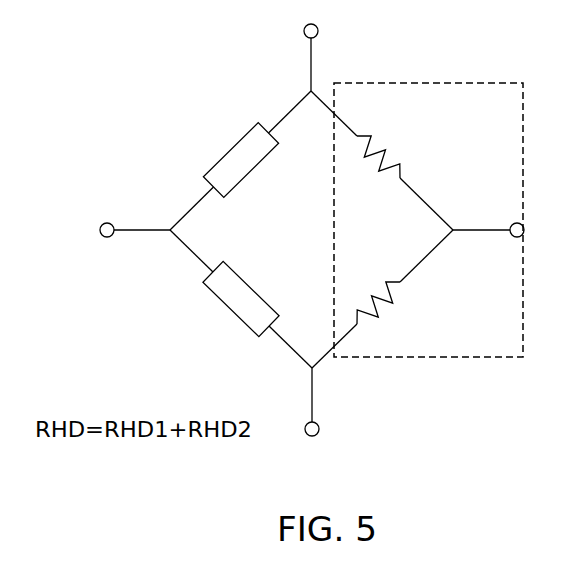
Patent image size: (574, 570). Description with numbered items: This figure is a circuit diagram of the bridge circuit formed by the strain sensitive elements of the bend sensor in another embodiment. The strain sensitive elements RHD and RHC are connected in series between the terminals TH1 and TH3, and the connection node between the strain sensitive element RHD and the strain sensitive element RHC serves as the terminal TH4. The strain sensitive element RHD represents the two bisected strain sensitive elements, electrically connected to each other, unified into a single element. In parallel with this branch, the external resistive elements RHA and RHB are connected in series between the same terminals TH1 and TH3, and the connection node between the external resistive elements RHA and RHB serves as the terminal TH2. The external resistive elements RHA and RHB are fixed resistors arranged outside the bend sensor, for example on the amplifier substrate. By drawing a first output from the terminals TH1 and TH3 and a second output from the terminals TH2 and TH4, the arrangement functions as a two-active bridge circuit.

The terminal TH1 is at (339, 405).
The terminal TH2 is at (499, 215).
The terminal TH3 is at (338, 55).
The terminal TH4 is at (125, 214).
The external resistive element RHA is at (382, 299).
The external resistive element RHB is at (382, 160).
The strain sensitive element RHC is at (240, 160).
The strain sensitive element RHD is at (241, 299).